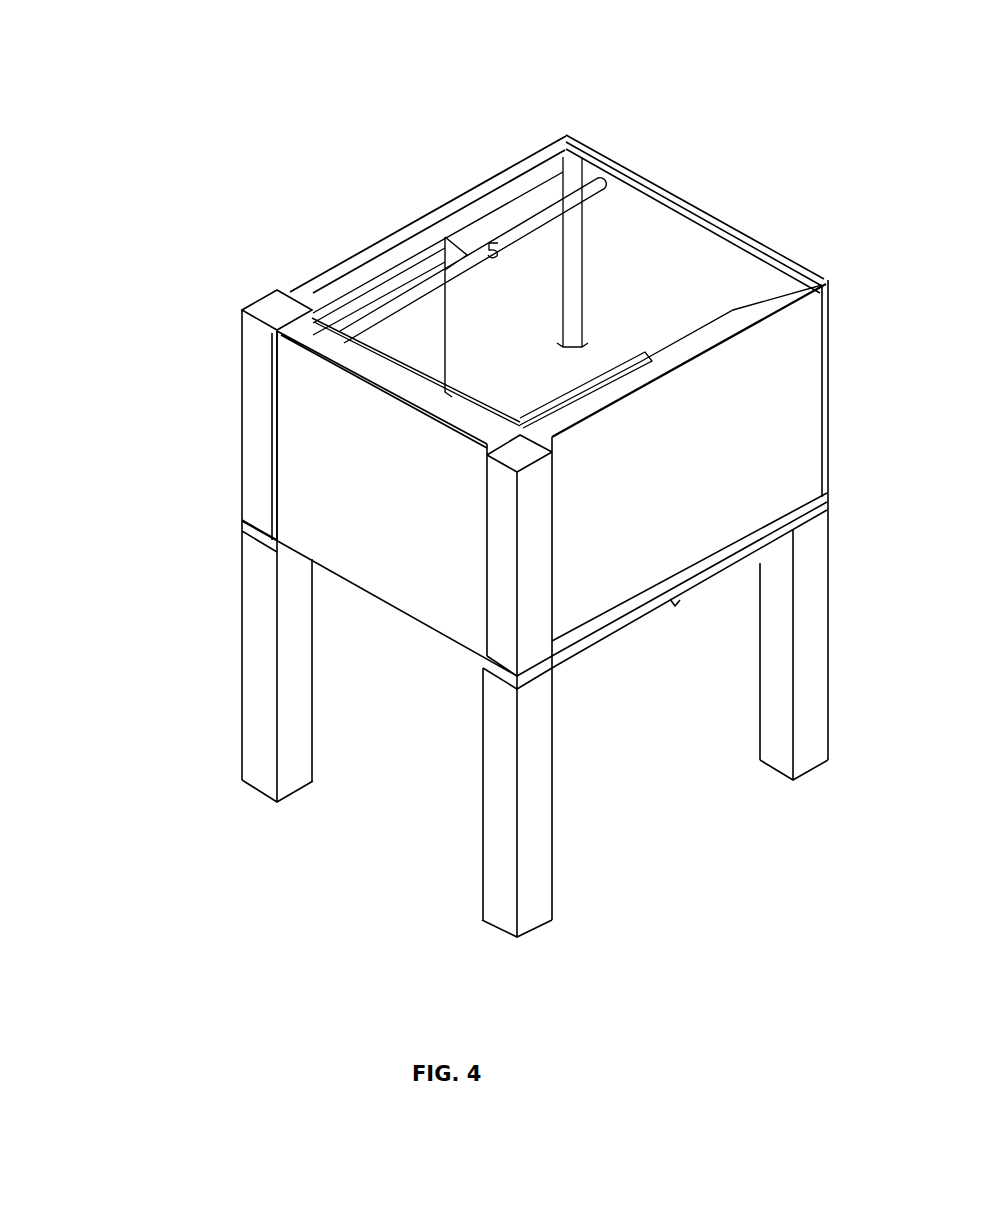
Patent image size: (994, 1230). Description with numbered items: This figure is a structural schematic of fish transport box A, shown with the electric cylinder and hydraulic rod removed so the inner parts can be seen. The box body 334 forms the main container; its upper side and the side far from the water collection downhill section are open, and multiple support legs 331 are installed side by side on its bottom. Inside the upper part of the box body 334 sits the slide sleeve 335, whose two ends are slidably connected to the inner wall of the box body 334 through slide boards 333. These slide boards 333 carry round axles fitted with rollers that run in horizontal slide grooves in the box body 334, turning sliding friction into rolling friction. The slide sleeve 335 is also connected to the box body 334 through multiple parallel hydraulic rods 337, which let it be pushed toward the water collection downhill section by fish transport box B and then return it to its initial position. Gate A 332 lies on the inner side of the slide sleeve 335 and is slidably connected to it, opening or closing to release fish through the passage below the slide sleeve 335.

The support leg 331 is at (550, 912).
The gate A 332 is at (283, 492).
The slide board 333 is at (335, 325).
The box body 334 is at (553, 140).
The slide sleeve 335 is at (465, 500).
The hydraulic rod 337 is at (443, 237).